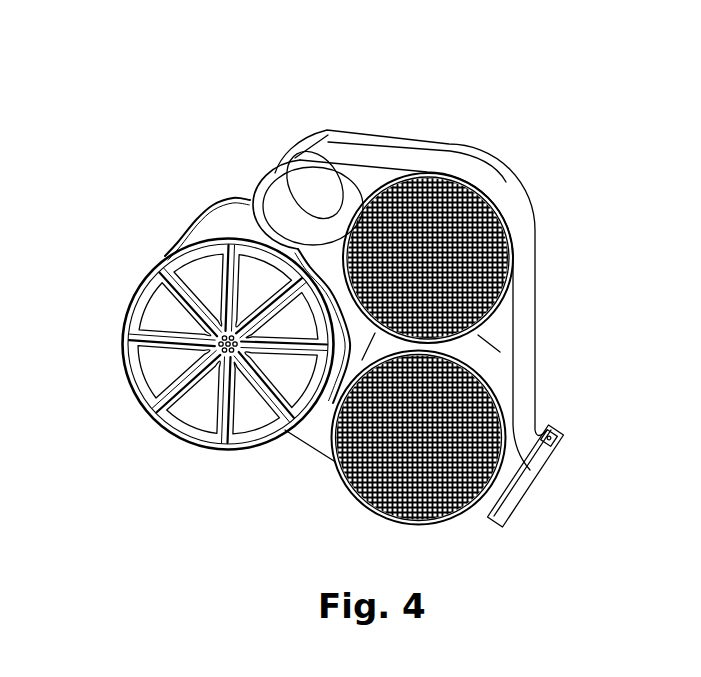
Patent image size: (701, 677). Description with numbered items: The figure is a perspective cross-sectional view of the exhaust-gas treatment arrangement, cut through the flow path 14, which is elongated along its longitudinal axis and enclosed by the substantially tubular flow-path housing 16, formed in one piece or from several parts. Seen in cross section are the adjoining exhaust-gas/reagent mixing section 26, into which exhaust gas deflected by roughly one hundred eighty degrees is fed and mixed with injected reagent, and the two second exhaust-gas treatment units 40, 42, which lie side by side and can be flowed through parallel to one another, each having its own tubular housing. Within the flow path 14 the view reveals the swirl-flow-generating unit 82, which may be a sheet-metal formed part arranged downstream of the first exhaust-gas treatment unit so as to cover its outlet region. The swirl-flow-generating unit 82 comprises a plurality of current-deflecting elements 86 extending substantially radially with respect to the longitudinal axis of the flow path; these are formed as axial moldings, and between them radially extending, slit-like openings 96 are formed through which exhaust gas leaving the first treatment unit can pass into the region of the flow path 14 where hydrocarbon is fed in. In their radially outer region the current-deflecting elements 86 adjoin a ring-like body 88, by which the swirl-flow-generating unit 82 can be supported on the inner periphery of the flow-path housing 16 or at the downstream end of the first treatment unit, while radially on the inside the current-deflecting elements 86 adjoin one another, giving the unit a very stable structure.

The flow path 14 is at (178, 240).
The flow-path housing 16 is at (216, 228).
The exhaust-gas/reagent mixing section 26 is at (294, 158).
The second exhaust-gas treatment unit 40 is at (496, 318).
The second exhaust-gas treatment unit 42 is at (460, 517).
The swirl-flow-generating unit 82 is at (155, 372).
The current-deflecting element 86 is at (245, 420).
The ring-like body 88 is at (145, 297).
The opening 96 is at (215, 420).